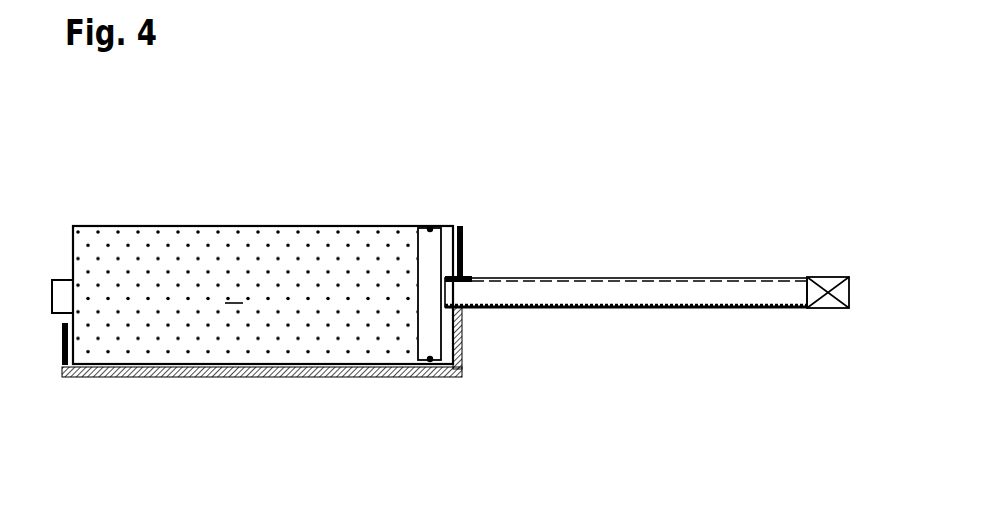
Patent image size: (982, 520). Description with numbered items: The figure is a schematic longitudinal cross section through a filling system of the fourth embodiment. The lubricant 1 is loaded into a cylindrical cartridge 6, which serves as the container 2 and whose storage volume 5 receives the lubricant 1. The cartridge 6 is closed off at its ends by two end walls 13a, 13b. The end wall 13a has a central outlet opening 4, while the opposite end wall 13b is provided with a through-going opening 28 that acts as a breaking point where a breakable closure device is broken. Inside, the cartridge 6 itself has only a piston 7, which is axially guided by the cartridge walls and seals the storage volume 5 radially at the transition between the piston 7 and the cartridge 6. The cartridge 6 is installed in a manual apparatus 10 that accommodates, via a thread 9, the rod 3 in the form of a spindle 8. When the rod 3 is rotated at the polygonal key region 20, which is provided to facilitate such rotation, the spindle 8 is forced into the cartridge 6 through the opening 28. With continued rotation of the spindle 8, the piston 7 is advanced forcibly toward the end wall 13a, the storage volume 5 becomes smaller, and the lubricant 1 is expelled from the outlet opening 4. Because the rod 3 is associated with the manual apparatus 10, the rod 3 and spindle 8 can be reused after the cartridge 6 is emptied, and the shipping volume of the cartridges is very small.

The lubricant 1 is at (234, 291).
The container 2 is at (315, 188).
The rod 3 is at (645, 240).
The outlet opening 4 is at (52, 295).
The storage volume 5 is at (145, 270).
The cartridge 6 is at (255, 226).
The piston 7 is at (418, 228).
The spindle 8 is at (646, 308).
The thread 9 is at (464, 278).
The manual apparatus 10 is at (311, 378).
The end wall 13a is at (63, 250).
The end wall 13b is at (457, 234).
The polygonal key region 20 is at (830, 277).
The through-going opening 28 is at (450, 315).